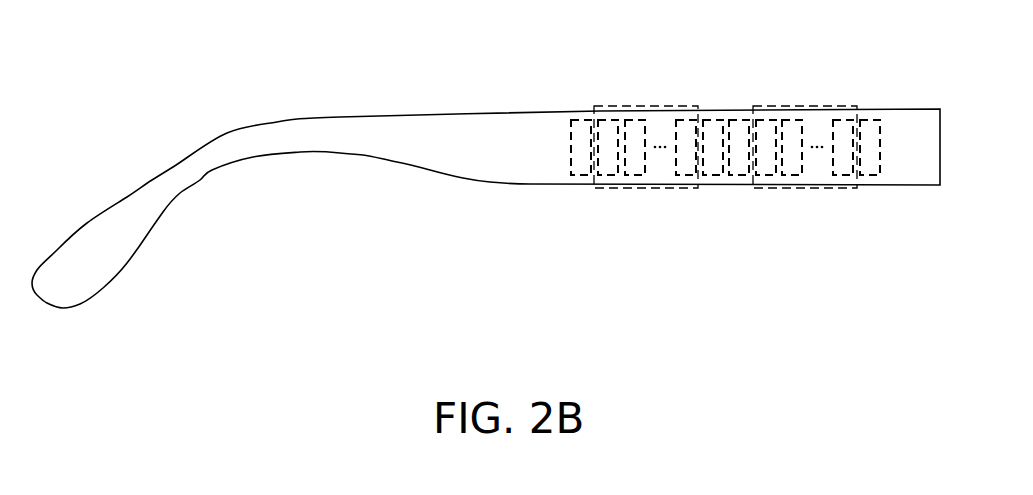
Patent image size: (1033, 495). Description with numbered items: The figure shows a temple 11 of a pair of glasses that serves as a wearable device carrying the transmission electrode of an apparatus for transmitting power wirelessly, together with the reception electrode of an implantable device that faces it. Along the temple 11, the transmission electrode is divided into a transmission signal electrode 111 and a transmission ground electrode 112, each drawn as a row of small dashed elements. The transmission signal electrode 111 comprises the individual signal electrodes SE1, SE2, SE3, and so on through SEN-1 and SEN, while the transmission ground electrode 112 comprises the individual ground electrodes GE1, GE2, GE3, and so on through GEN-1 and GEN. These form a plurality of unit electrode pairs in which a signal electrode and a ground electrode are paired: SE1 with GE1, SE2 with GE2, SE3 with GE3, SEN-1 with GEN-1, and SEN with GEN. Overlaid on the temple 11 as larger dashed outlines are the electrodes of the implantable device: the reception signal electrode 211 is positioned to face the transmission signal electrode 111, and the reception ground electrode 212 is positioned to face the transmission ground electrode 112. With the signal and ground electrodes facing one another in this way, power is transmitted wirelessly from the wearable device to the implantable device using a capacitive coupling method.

The temple 11 is at (488, 117).
The reception signal electrode 211 is at (652, 105).
The reception ground electrode 212 is at (812, 105).
The transmission signal electrode 111 is at (615, 222).
The transmission ground electrode 112 is at (831, 222).
The first transmission signal electrode SE1 is at (578, 176).
The second transmission signal electrode SE2 is at (608, 176).
The third transmission signal electrode SE3 is at (635, 176).
The (N-1)th transmission signal electrode SEN-1 is at (685, 176).
The Nth transmission signal electrode SEN is at (695, 186).
The first transmission ground electrode GE1 is at (738, 176).
The second transmission ground electrode GE2 is at (763, 176).
The third transmission ground electrode GE3 is at (792, 176).
The (N-1)th transmission ground electrode GEN-1 is at (847, 176).
The Nth transmission ground electrode GEN is at (897, 186).